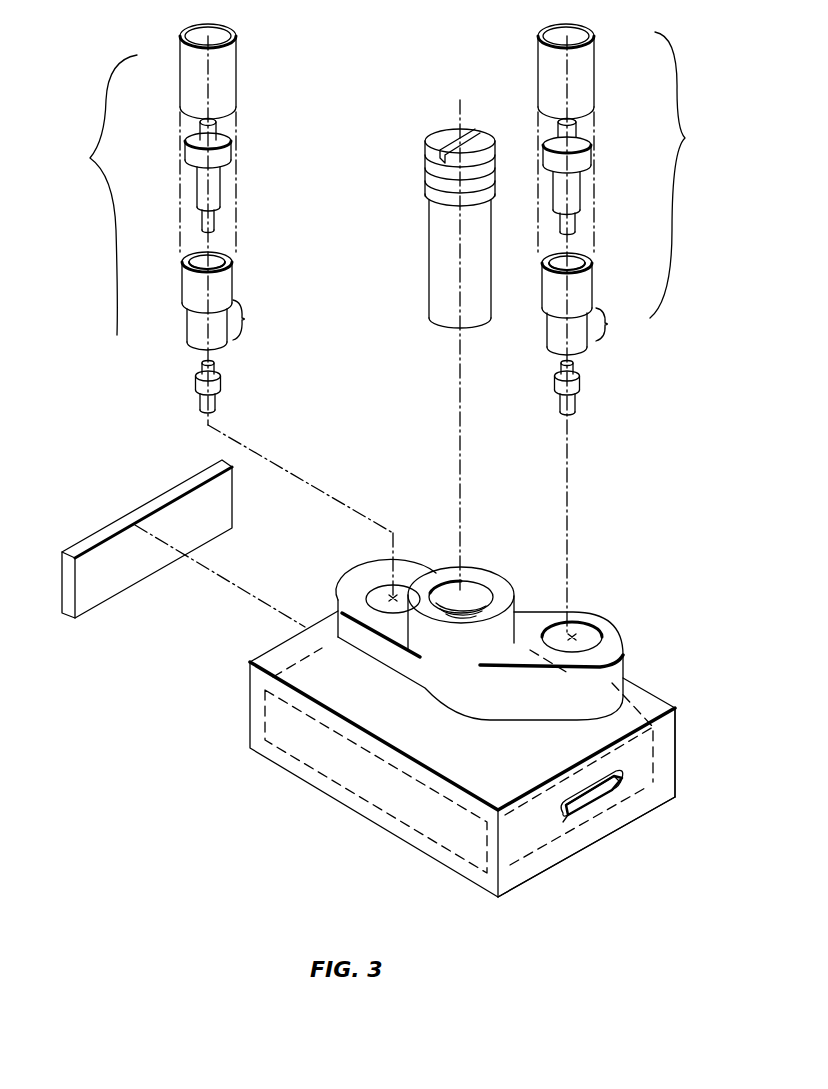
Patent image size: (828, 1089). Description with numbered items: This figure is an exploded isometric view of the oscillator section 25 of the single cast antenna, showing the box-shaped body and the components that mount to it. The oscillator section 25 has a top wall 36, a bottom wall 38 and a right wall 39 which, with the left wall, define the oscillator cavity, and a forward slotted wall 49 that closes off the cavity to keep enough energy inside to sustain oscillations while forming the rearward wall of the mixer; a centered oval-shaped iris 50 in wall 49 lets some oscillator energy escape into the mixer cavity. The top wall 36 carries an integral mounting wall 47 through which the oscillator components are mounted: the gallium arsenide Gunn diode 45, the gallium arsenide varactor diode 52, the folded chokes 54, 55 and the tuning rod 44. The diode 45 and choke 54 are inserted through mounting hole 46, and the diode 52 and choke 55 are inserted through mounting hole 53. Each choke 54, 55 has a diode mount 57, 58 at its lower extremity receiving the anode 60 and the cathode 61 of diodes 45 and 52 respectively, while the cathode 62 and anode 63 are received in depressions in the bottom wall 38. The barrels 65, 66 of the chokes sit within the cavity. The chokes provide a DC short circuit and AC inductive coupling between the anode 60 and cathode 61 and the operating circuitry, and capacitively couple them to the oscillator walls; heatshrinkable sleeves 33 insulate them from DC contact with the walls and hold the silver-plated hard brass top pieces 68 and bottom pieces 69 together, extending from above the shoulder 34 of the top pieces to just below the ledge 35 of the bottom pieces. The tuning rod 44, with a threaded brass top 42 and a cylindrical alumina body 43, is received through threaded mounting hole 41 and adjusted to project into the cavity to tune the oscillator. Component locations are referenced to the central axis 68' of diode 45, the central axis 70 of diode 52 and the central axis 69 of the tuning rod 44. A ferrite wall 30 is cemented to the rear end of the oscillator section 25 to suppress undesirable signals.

The oscillator section 25 is at (494, 714).
The ferrite wall 30 is at (112, 600).
The heatshrinkable sleeve 33 is at (232, 67).
The shoulder 34 is at (238, 150).
The ledge 35 is at (185, 313).
The top wall 36 is at (511, 774).
The bottom wall 38 is at (597, 840).
The right wall 39 is at (677, 737).
The threaded mounting hole 41 is at (483, 580).
The threaded brass top 42 is at (432, 183).
The cylindrical alumina body 43 is at (443, 277).
The tuning rod 44 is at (433, 193).
The Gunn diode 45 is at (191, 384).
The mounting hole 46 is at (390, 558).
The mounting wall 47 is at (509, 623).
The forward slotted wall 49 is at (637, 778).
The iris 50 is at (563, 817).
The varactor diode 52 is at (591, 399).
The mounting hole 53 is at (613, 603).
The folded choke 54 is at (82, 158).
The folded choke 55 is at (695, 138).
The diode mount 57 is at (213, 346).
The diode mount 58 is at (577, 346).
The anode 60 is at (213, 365).
The cathode 61 is at (560, 367).
The cathode 62 is at (217, 402).
The anode 63 is at (557, 407).
The barrel 65 is at (248, 318).
The barrel 66 is at (607, 322).
The top piece 68 is at (396, 183).
The central axis of Gunn diode 68' is at (418, 552).
The bottom piece 69 is at (171, 290).
The central axis of varactor diode 70 is at (568, 640).